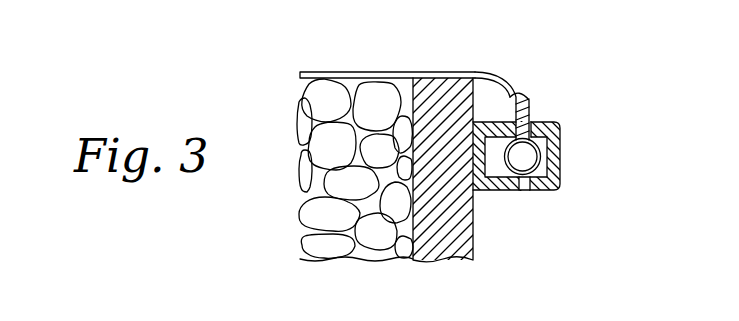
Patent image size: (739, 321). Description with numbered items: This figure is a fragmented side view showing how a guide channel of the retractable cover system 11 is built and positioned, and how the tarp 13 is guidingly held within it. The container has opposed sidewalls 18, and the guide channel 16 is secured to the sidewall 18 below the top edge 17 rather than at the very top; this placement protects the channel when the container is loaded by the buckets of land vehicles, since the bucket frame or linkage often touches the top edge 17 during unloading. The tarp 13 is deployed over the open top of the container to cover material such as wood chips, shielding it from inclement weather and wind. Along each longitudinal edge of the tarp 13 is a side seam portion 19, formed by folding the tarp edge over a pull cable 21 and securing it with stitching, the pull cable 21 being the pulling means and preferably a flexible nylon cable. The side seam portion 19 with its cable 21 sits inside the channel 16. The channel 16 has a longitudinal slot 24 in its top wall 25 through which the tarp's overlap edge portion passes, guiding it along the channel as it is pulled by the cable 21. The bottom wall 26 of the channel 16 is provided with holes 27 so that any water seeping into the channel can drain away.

The retractable cover system 11 is at (333, 150).
The tarp 13 is at (360, 72).
The guide channel 16 is at (558, 155).
The top edge 17 is at (442, 82).
The sidewall 18 is at (450, 225).
The side seam portion 19 is at (519, 97).
The pull cable 21 is at (546, 190).
The longitudinal slot 24 is at (527, 102).
The top wall 25 is at (542, 123).
The bottom wall 26 is at (534, 190).
The holes 27 is at (521, 190).